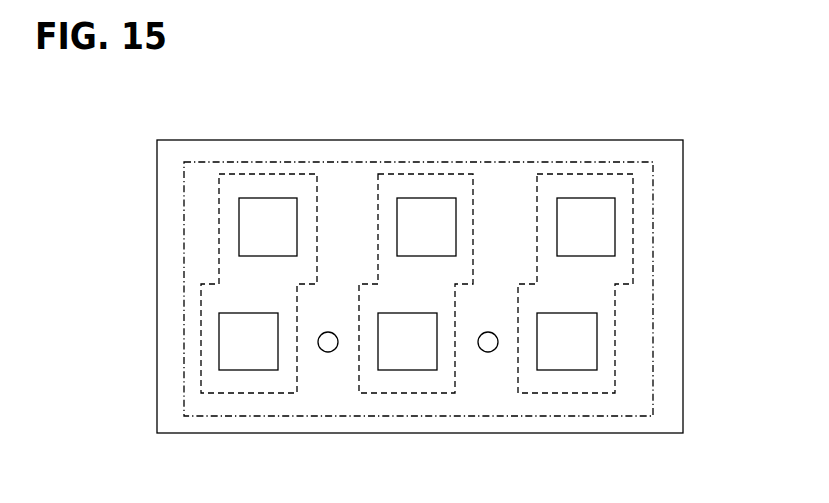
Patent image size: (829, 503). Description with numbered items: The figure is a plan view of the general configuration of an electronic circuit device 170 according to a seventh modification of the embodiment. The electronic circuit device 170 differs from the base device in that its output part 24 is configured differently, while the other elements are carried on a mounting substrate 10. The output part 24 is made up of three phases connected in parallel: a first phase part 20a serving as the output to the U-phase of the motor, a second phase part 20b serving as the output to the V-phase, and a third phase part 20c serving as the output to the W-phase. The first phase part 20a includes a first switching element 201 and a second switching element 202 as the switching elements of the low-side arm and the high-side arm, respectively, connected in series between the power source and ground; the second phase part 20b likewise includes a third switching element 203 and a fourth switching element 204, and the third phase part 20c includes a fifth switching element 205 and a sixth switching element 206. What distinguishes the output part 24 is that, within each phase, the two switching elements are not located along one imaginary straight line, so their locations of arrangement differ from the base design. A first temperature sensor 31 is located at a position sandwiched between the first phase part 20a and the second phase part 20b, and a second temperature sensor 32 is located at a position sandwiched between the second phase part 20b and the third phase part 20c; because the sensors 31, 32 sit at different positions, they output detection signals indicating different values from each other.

The electronic circuit device 170 is at (697, 113).
The mounting substrate 10 is at (674, 358).
The output part 24 is at (652, 417).
The first phase part 20a is at (233, 160).
The second phase part 20b is at (388, 160).
The third phase part 20c is at (549, 160).
The first switching element 201 is at (242, 370).
The second switching element 202 is at (283, 198).
The third switching element 203 is at (401, 370).
The fourth switching element 204 is at (440, 198).
The fifth switching element 205 is at (578, 370).
The sixth switching element 206 is at (602, 198).
The first temperature sensor 31 is at (328, 352).
The second temperature sensor 32 is at (488, 352).